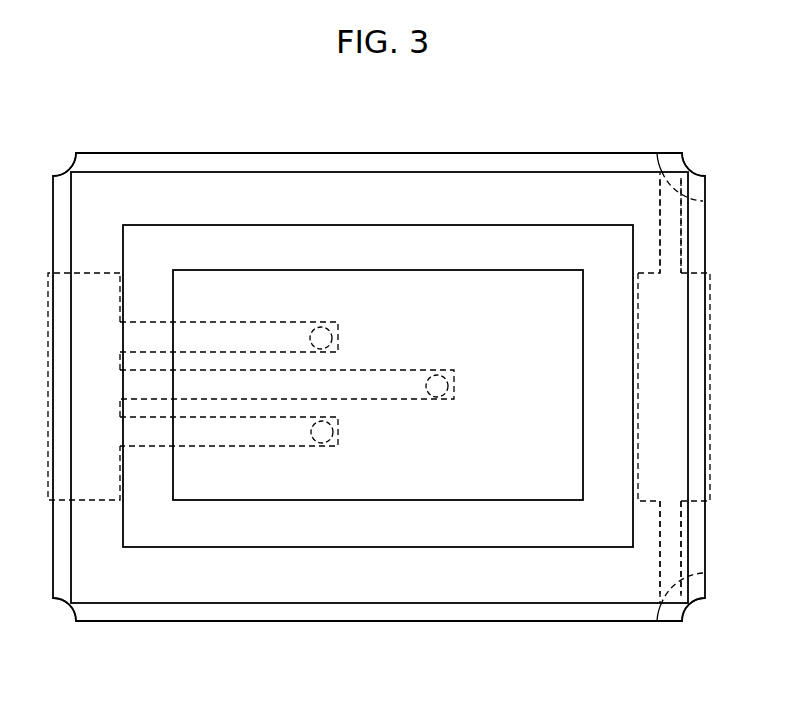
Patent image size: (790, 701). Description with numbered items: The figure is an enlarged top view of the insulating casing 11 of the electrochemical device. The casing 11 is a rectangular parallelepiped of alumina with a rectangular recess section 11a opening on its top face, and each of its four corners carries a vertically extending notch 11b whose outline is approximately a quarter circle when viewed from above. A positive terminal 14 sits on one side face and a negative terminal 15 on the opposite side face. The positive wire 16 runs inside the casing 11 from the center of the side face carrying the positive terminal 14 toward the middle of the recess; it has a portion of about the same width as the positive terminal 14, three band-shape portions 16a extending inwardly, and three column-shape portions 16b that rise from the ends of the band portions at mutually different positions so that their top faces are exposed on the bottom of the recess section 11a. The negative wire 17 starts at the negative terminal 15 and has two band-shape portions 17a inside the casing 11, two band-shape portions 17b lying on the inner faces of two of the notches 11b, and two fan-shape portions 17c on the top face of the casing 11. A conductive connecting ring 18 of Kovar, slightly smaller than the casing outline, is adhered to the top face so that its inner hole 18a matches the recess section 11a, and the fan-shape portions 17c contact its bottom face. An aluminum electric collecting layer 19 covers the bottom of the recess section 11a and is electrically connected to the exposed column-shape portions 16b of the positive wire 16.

The casing 11 is at (62, 245).
The recess section 11a is at (208, 225).
The corner notch of case 11b is at (72, 165).
The positive terminal 14 is at (50, 380).
The negative terminal 15 is at (707, 382).
The positive wire 16 is at (230, 498).
The band-shape portions 16a is at (238, 432).
The column-shape portions 16b is at (322, 442).
The negative wire 17 is at (703, 390).
The band-shape portions 17a is at (677, 235).
The band-shape portions 17b is at (693, 173).
The fan-shape portions 17c is at (700, 191).
The connecting ring 18 is at (87, 213).
The inner hole 18a is at (378, 324).
The electric collecting layer 19 is at (360, 300).